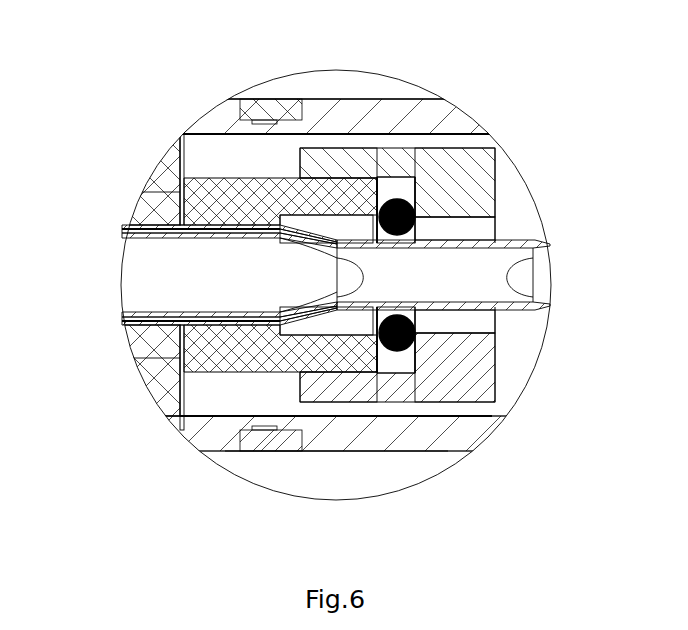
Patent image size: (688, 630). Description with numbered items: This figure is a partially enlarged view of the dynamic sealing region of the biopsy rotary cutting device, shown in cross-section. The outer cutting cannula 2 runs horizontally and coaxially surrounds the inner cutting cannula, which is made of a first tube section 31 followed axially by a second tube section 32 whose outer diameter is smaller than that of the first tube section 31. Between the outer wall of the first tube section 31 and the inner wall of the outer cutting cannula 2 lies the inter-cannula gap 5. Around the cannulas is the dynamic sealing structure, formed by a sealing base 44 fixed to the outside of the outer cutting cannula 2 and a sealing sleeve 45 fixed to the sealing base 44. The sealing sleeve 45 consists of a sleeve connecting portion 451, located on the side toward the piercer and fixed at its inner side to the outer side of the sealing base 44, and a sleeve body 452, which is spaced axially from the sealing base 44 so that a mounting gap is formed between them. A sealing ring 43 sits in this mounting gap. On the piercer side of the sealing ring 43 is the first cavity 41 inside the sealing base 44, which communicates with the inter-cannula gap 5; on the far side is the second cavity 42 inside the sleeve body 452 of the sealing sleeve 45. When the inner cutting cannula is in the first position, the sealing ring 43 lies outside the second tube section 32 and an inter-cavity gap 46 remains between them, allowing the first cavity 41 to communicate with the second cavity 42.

The outer cutting cannula 2 is at (153, 227).
The inter-cannula gap 5 is at (158, 318).
The first tube section 31 is at (240, 313).
The second tube section 32 is at (497, 306).
The first cavity 41 is at (340, 318).
The second cavity 42 is at (448, 320).
The sealing ring 43 is at (397, 352).
The sealing base 44 is at (258, 195).
The sealing sleeve 45 is at (413, 142).
The sleeve connecting portion 451 is at (359, 163).
The sleeve body 452 is at (452, 190).
The inter-cavity gap 46 is at (412, 237).